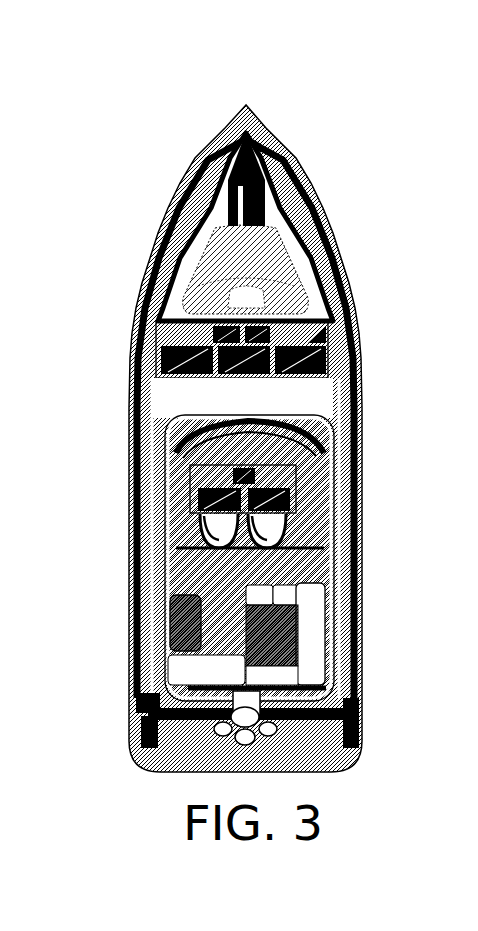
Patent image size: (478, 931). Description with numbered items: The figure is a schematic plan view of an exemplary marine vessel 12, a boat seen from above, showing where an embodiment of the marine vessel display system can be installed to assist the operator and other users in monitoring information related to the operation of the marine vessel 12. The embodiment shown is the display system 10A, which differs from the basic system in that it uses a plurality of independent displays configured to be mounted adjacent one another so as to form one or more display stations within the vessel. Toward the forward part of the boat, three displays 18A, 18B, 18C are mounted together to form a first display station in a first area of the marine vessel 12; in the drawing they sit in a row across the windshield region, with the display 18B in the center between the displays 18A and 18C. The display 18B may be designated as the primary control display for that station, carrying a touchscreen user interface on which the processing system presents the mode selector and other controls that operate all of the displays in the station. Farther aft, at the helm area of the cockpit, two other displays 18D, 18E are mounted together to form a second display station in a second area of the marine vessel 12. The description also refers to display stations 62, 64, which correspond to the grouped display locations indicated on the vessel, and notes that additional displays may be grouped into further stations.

The marine vessel 12 is at (267, 157).
The windshield 62 is at (245, 348).
The helm console 64 is at (290, 463).
The display system 10A is at (246, 552).
The display 18A is at (150, 330).
The display 18B is at (227, 372).
The display 18C is at (322, 383).
The display 18D is at (173, 462).
The display 18E is at (280, 511).